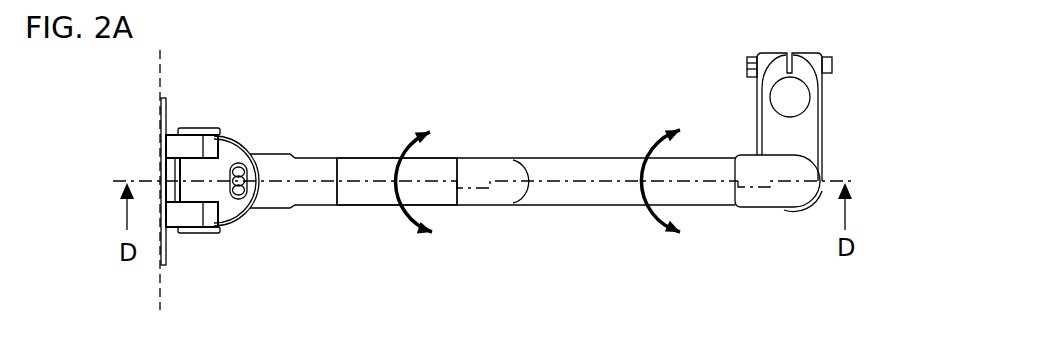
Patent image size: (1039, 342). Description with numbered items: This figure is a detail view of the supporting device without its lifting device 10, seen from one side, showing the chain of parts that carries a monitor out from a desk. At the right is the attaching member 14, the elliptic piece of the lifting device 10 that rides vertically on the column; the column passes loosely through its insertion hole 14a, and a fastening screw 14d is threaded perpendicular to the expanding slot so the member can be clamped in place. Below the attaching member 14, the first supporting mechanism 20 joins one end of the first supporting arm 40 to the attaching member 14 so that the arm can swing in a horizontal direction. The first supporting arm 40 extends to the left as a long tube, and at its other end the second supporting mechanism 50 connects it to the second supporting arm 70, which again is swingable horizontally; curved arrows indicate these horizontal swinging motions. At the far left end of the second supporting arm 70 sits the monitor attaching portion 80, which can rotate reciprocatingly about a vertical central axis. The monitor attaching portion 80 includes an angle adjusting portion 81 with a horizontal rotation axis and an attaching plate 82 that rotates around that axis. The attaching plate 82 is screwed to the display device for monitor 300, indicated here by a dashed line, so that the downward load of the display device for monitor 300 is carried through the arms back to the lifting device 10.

The lifting device 10 is at (724, 84).
The attaching member 14 is at (844, 100).
The insertion hole 14a is at (786, 110).
The fastening screw 14d is at (836, 62).
The first supporting mechanism 20 is at (764, 232).
The first supporting arm 40 is at (588, 172).
The second supporting mechanism 50 is at (458, 232).
The second supporting arm 70 is at (366, 172).
The monitor attaching portion 80 is at (256, 250).
The angle adjusting portion 81 is at (218, 172).
The attaching plate 82 is at (165, 244).
The display device for monitor 300 is at (172, 64).